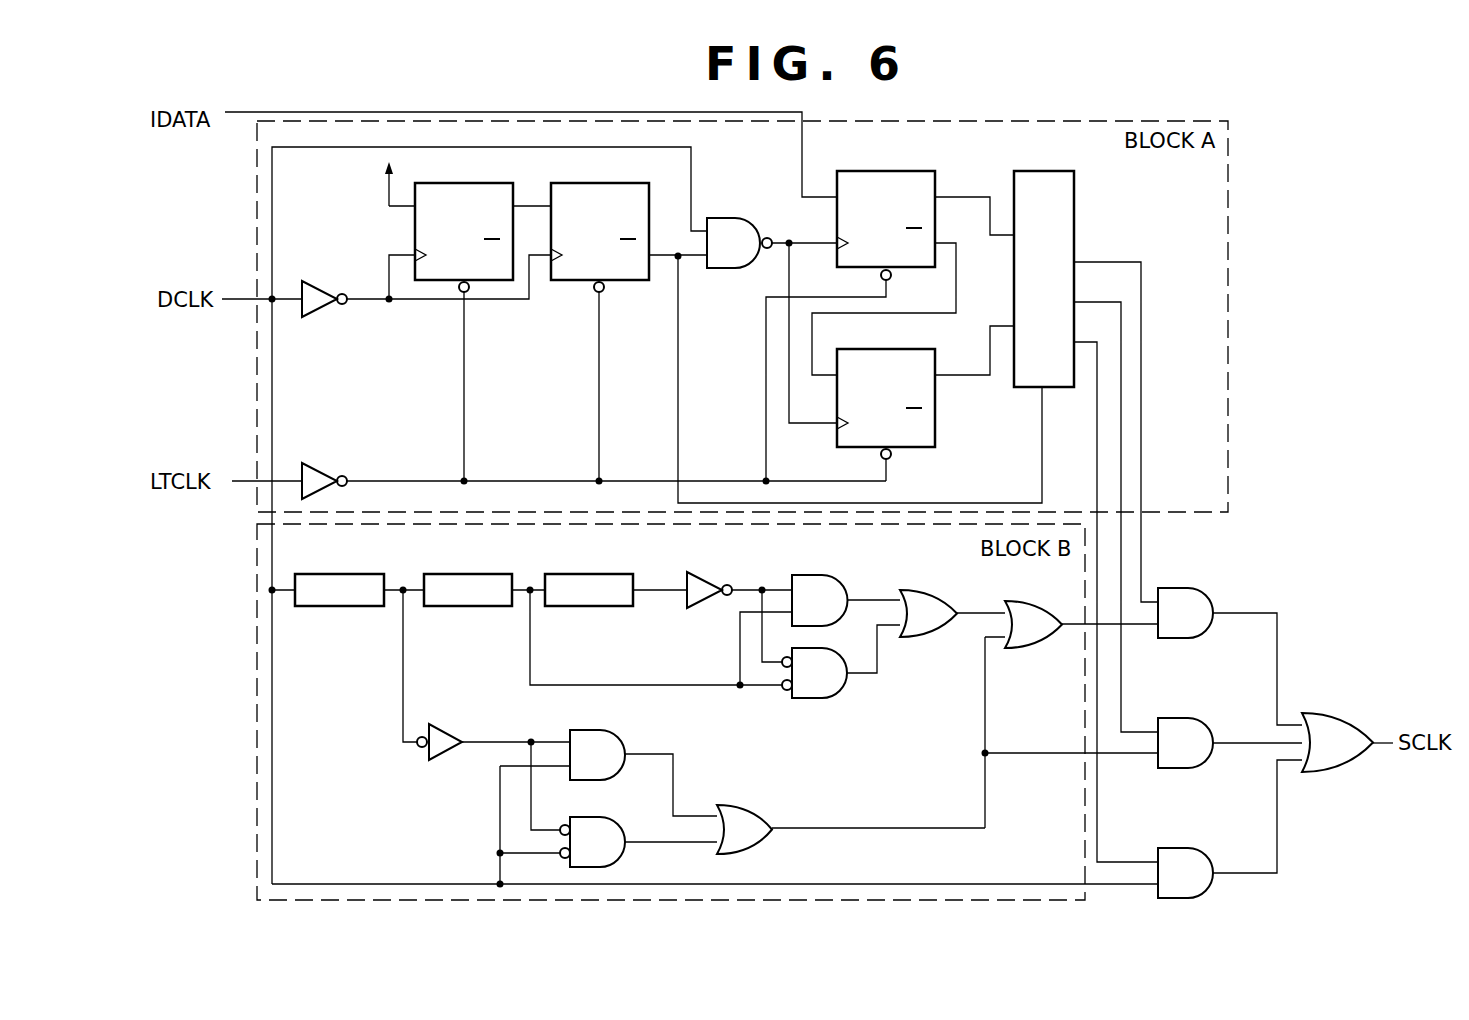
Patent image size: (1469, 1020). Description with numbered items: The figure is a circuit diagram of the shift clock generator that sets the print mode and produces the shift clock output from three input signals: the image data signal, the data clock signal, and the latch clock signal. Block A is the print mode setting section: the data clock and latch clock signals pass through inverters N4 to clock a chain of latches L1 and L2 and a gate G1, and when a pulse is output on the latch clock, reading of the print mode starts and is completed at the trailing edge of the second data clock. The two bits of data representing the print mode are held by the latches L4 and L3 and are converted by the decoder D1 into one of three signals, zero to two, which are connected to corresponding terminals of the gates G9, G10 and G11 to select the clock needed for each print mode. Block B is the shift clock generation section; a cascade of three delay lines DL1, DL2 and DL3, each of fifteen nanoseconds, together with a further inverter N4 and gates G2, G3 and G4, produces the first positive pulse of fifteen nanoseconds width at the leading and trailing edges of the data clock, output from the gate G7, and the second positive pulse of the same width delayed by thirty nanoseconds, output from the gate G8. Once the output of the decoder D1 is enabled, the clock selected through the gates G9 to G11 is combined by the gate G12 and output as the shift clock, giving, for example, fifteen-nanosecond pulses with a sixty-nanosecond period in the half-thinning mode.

The inverter N4 is at (594, 506).
The D flip-flop latch L1 is at (483, 316).
The D flip-flop latch L2 is at (796, 327).
The latch L3 is at (890, 311).
The latch L4 is at (925, 400).
The NAND gate G1 is at (772, 304).
The decoder D1 is at (1086, 501).
The 15ns delay line DL1 is at (348, 575).
The 15ns delay line DL2 is at (484, 575).
The 15ns delay line DL3 is at (661, 614).
The AND gate G2 is at (846, 586).
The AND gate with inverted inputs G3 is at (831, 657).
The OR gate G4 is at (952, 599).
The gate G7 is at (742, 794).
The gate G8 is at (1071, 700).
The gate G9 is at (1230, 642).
The gate G10 is at (1230, 728).
The gate G11 is at (1230, 829).
The gate G12 is at (1337, 728).